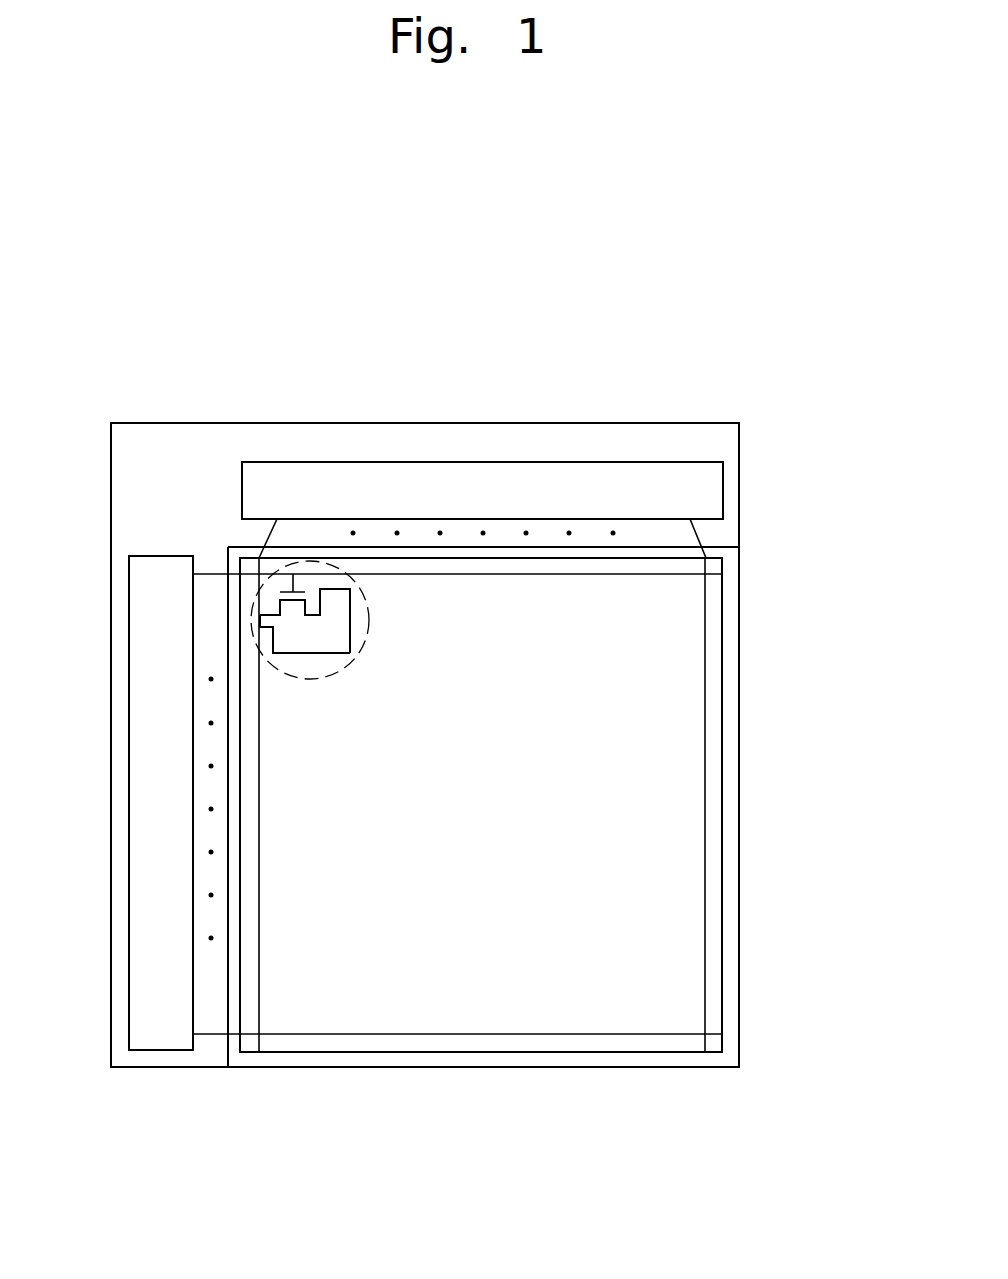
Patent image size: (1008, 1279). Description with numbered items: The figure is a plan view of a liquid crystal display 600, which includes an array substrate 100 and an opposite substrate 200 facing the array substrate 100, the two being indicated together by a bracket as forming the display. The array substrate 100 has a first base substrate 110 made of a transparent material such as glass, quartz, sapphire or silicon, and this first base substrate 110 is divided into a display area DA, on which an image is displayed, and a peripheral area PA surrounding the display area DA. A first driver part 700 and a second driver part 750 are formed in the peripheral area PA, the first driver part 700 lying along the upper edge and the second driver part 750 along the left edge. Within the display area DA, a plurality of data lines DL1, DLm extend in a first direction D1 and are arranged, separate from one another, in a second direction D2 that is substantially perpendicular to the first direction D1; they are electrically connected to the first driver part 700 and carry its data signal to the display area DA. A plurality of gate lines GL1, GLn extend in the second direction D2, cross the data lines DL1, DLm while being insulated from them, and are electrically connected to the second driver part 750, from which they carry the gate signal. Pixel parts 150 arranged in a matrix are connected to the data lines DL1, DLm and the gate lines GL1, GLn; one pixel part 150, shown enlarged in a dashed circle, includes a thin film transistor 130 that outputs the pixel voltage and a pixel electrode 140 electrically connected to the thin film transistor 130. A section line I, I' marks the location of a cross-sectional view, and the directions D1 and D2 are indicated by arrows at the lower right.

The array substrate 100 is at (713, 424).
The opposite substrate 200 is at (647, 545).
The liquid crystal display 600 is at (836, 353).
The first base substrate 110 is at (723, 535).
The first driver part 700 is at (485, 462).
The peripheral area PA is at (343, 448).
The second driver part 750 is at (130, 810).
The display area DA is at (723, 798).
The gate line GL1 is at (720, 576).
The gate line GLn is at (713, 1035).
The data line DL1 is at (259, 975).
The data line DLm is at (703, 978).
The thin film transistor 130 is at (290, 613).
The pixel electrode 140 is at (352, 618).
The pixel part 150 is at (362, 642).
The section line I is at (323, 769).
The section line I' is at (393, 747).
The first direction D1 is at (742, 1128).
The second direction D2 is at (705, 1158).